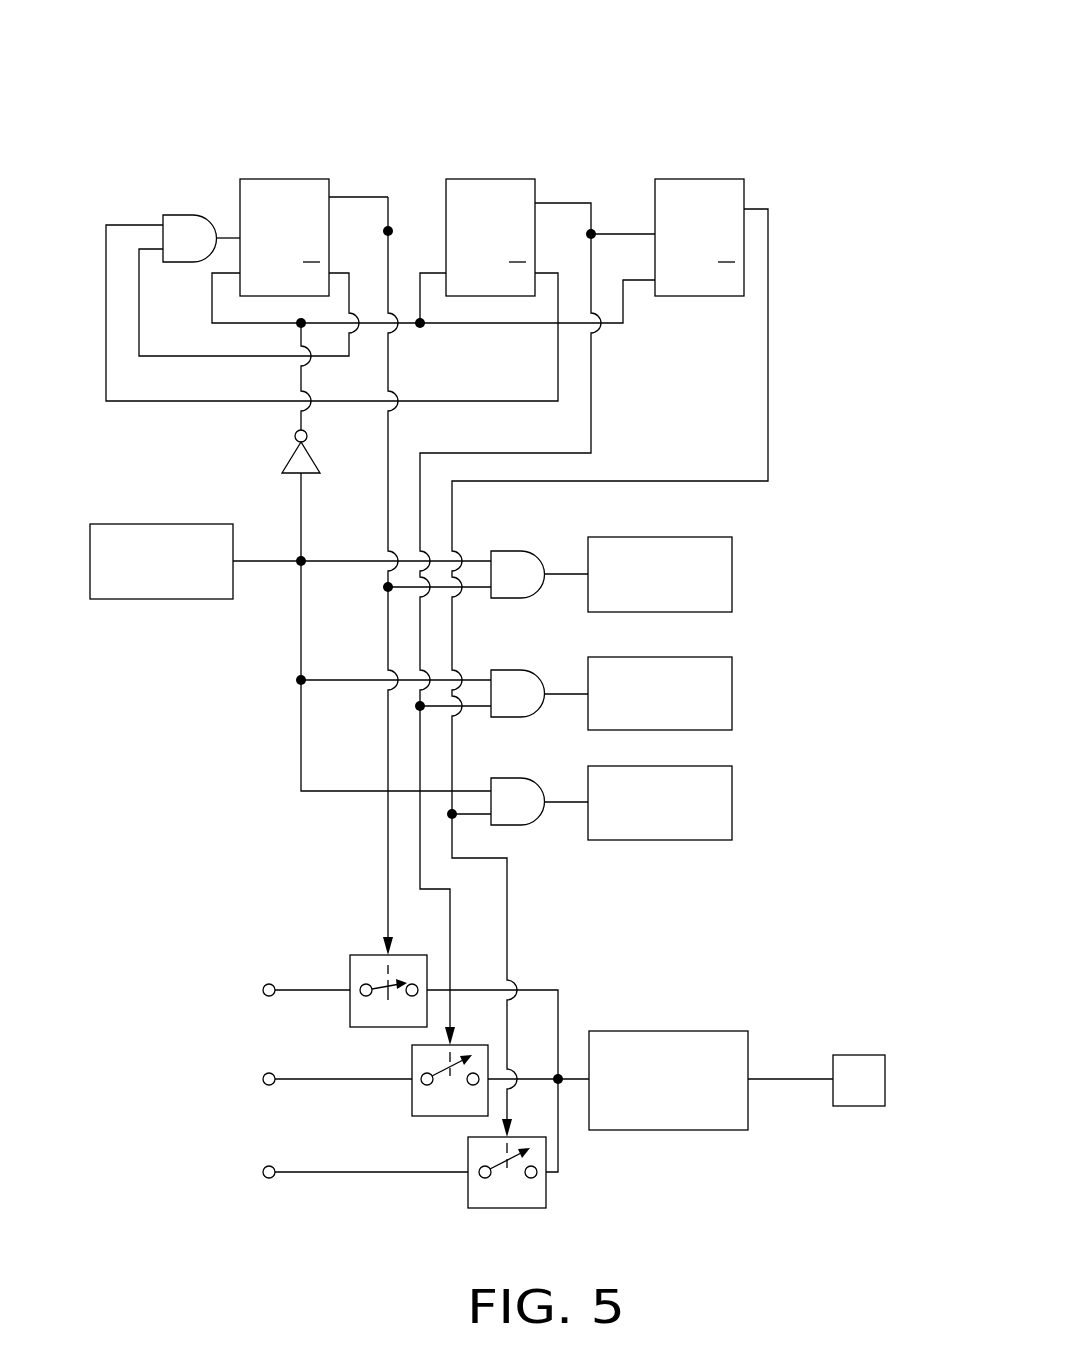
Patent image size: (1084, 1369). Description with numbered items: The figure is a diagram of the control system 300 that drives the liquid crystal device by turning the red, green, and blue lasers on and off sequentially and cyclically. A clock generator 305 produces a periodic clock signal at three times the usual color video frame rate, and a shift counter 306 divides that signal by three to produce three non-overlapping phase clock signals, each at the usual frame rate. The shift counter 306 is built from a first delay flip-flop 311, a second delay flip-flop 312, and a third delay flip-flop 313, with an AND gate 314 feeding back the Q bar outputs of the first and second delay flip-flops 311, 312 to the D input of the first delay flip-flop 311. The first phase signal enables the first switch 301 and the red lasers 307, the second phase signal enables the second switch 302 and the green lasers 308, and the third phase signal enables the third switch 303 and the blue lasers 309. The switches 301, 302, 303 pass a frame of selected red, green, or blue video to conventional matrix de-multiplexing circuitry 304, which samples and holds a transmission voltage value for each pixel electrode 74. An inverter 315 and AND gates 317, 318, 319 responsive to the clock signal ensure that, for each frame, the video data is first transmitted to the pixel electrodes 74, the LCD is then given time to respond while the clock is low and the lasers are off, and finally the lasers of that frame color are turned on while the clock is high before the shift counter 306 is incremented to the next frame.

The control system 300 is at (382, 55).
The shift counter 306 is at (207, 183).
The AND gate 314 is at (183, 215).
The first delay flip-flop 311 is at (288, 179).
The second delay flip-flop 312 is at (485, 179).
The third delay flip-flop 313 is at (705, 179).
The inverter 315 is at (290, 455).
The clock generator 305 is at (168, 524).
The AND gate 317 is at (505, 551).
The AND gate 318 is at (505, 670).
The AND gate 319 is at (505, 778).
The red lasers 307 is at (732, 565).
The green lasers 308 is at (732, 685).
The blue lasers 309 is at (732, 795).
The first switch 301 is at (367, 955).
The second switch 302 is at (412, 1060).
The third switch 303 is at (468, 1157).
The matrix de-multiplexing circuitry 304 is at (668, 1031).
The pixel electrode 74 is at (862, 1055).